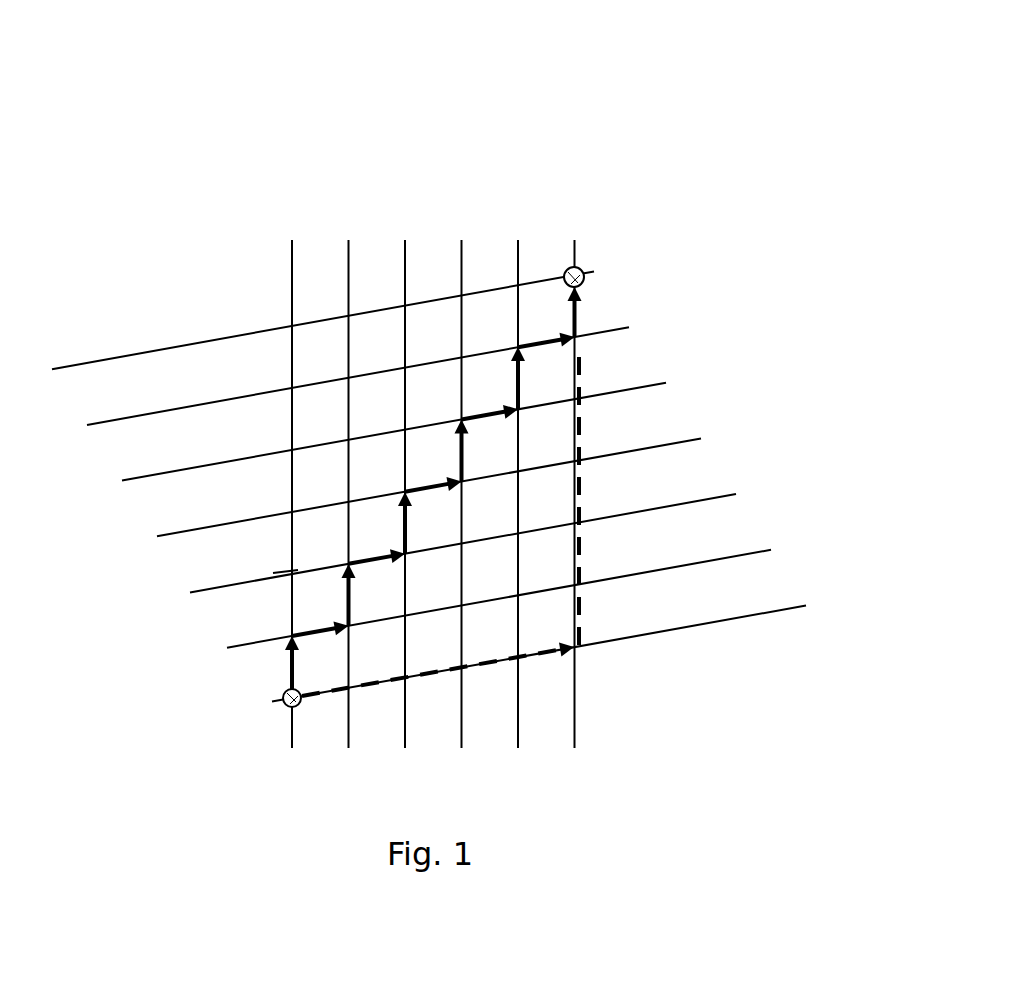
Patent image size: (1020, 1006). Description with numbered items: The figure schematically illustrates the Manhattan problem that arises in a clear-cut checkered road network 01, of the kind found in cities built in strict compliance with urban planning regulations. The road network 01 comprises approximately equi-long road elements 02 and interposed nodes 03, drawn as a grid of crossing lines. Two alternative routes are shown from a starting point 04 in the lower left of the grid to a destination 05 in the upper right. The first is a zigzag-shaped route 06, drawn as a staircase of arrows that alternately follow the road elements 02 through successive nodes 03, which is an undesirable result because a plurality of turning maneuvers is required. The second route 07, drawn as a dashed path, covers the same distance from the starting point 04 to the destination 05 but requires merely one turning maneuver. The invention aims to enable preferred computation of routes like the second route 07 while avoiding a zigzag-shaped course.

The road network 01 is at (663, 113).
The road elements 02 is at (370, 309).
The nodes 03 is at (404, 308).
The starting point 04 is at (289, 708).
The destination 05 is at (582, 272).
The zigzag-shaped route 06 is at (348, 598).
The second route 07 is at (499, 665).